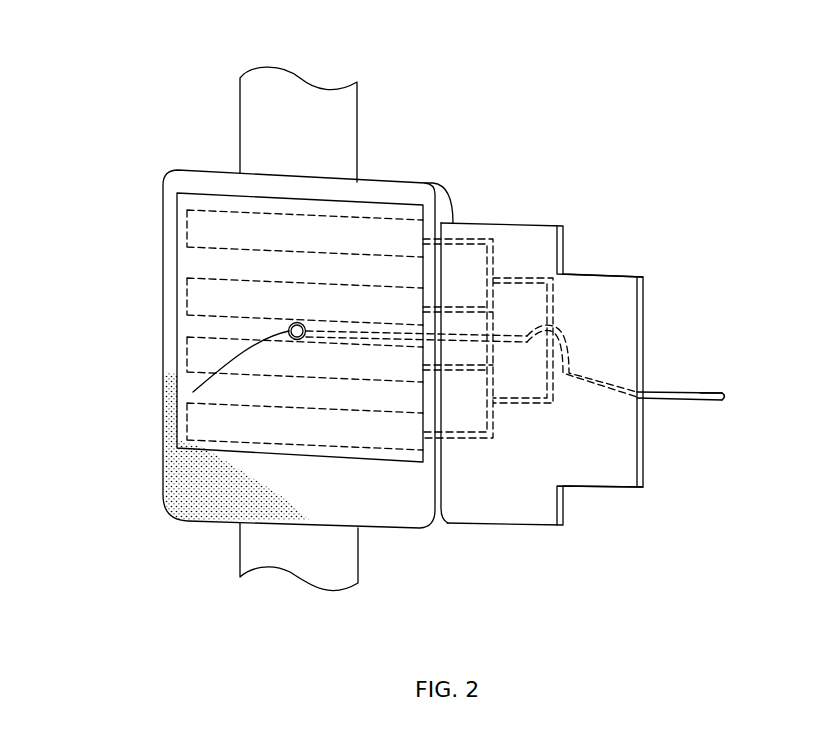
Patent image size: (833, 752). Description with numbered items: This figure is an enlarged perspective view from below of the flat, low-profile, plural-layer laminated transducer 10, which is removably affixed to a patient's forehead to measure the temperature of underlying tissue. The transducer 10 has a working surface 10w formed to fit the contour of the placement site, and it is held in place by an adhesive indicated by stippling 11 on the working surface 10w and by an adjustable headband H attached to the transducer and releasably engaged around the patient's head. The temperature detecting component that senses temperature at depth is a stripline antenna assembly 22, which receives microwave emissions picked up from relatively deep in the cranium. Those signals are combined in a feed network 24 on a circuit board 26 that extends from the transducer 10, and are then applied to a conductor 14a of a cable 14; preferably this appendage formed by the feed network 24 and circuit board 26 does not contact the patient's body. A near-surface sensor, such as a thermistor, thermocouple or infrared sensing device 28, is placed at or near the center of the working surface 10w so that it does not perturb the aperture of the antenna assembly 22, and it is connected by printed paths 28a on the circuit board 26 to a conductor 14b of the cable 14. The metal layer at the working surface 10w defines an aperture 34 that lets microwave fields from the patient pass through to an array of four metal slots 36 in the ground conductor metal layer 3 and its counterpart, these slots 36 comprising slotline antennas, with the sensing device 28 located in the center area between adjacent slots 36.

The metal layer 3 is at (266, 623).
The headband H is at (320, 97).
The transducer 10 is at (252, 335).
The working surface 10w is at (187, 320).
The stippling 11 is at (213, 507).
The cable 14 is at (692, 397).
The conductor 14a is at (733, 403).
The conductor 14b is at (735, 394).
The stripline antenna assembly 22 is at (278, 291).
The feed network 24 is at (560, 308).
The circuit board 26 is at (627, 292).
The sensing device 28 is at (193, 392).
The printed paths 28a is at (572, 371).
The aperture 34 is at (176, 176).
The metal slots 36 is at (380, 228).